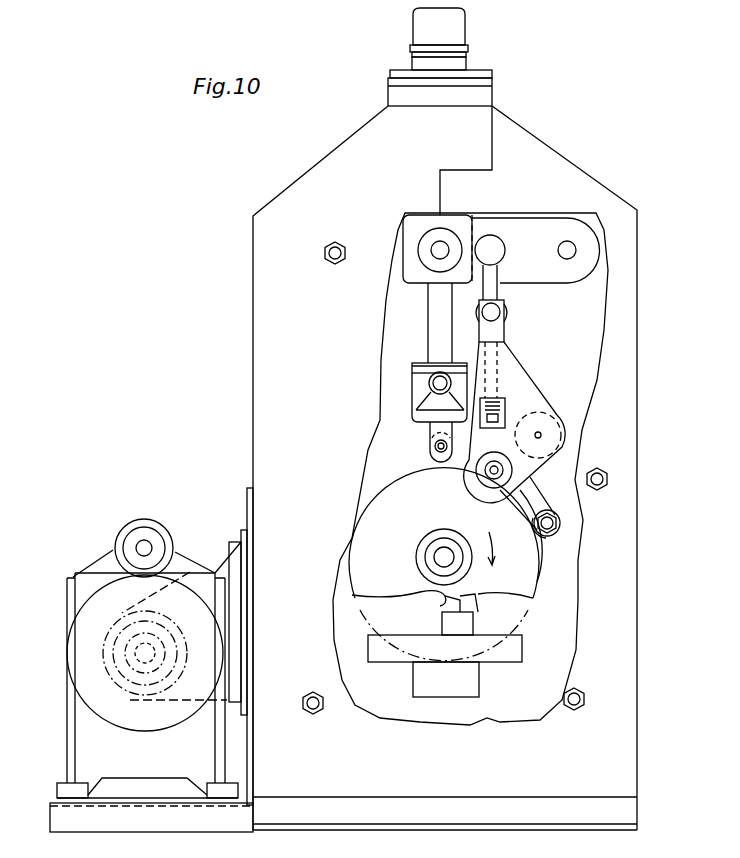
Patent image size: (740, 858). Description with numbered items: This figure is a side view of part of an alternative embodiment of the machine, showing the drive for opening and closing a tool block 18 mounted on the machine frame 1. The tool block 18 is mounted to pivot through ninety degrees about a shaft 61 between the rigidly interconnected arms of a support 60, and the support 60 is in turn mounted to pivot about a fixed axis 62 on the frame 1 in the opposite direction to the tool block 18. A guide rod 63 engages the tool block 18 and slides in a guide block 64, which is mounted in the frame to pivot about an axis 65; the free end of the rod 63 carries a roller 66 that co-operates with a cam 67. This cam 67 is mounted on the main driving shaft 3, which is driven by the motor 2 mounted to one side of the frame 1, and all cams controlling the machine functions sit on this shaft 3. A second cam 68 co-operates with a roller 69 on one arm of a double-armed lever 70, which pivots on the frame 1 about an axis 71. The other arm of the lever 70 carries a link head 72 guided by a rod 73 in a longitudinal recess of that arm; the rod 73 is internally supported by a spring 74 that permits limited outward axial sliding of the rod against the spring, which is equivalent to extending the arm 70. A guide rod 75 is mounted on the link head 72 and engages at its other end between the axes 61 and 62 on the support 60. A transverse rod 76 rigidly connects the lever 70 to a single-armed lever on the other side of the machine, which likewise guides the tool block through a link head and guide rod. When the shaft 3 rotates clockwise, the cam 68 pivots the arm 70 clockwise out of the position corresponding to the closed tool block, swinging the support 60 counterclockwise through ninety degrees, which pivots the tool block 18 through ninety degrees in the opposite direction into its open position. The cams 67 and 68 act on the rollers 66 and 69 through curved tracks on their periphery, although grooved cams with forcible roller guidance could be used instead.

The machine frame 1 is at (625, 628).
The motor 2 is at (107, 592).
The main driving shaft 3 is at (437, 555).
The tool block 18 is at (403, 245).
The support 60 is at (558, 270).
The shaft 61 is at (434, 250).
The fixed axis 62 is at (567, 243).
The guide rod 63 is at (438, 325).
The guide block 64 is at (413, 385).
The axis 65 is at (436, 385).
The roller 66 is at (430, 447).
The cam 67 is at (369, 493).
The cam 68 is at (540, 568).
The roller 69 is at (560, 522).
The double-armed lever 70 is at (542, 408).
The axis 71 is at (490, 472).
The link head 72 is at (500, 328).
The rod 73 is at (500, 360).
The spring 74 is at (503, 410).
The guide rod 75 is at (493, 295).
The transverse rod 76 is at (563, 432).